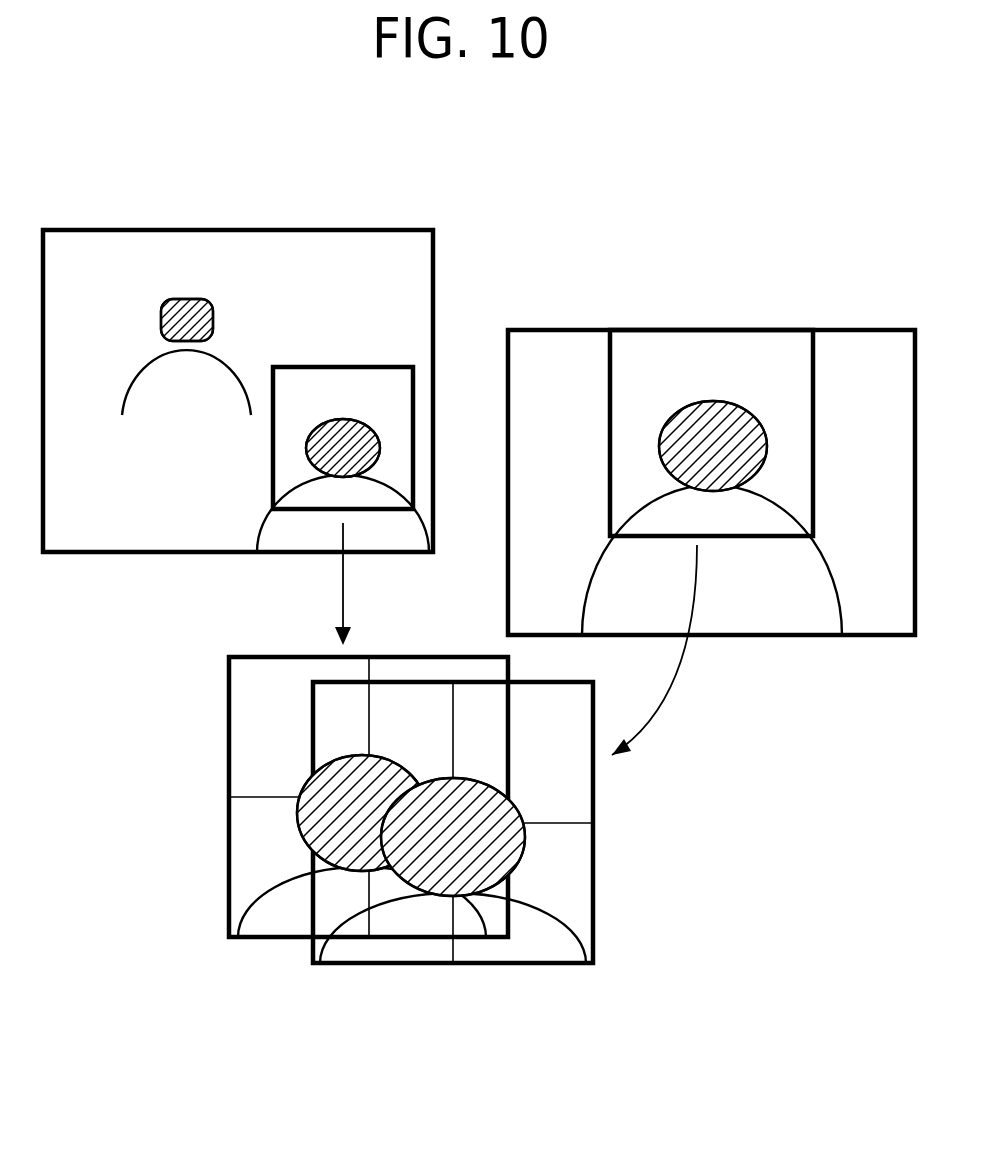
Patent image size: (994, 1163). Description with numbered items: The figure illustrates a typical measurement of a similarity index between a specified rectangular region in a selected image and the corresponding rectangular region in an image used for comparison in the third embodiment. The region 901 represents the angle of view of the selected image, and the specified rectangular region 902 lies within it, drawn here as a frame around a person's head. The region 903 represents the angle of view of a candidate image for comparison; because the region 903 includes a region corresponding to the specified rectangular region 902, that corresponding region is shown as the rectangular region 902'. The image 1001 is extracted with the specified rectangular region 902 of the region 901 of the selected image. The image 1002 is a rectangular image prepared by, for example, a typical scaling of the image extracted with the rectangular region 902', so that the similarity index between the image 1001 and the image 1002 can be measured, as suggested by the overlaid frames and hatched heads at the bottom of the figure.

The region 901 is at (760, 636).
The specified rectangular region 902 is at (666, 433).
The rectangular region 902' is at (293, 438).
The region 903 is at (170, 553).
The image 1001 is at (312, 950).
The image 1002 is at (229, 750).